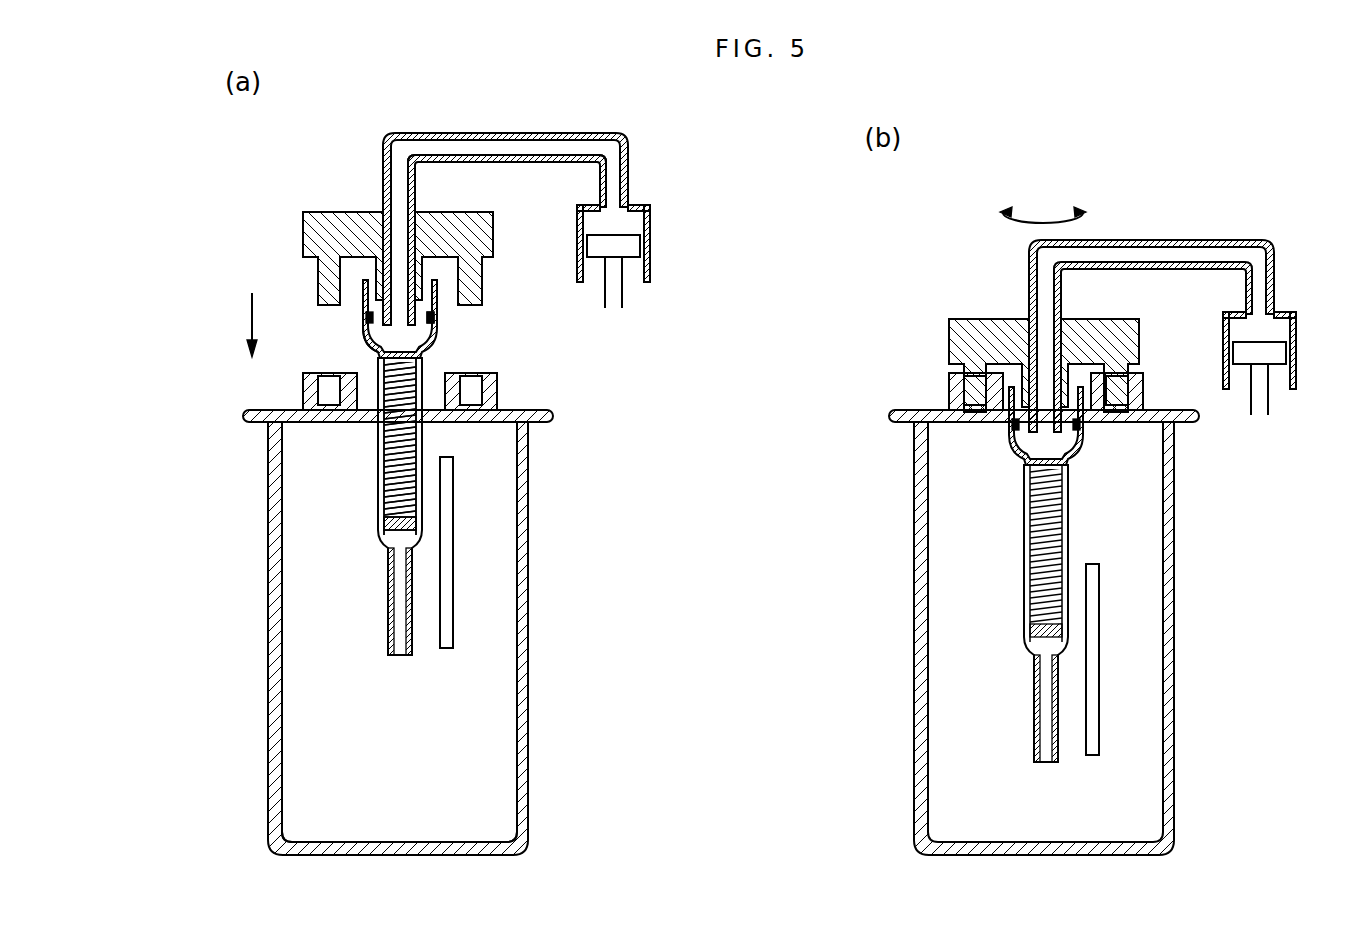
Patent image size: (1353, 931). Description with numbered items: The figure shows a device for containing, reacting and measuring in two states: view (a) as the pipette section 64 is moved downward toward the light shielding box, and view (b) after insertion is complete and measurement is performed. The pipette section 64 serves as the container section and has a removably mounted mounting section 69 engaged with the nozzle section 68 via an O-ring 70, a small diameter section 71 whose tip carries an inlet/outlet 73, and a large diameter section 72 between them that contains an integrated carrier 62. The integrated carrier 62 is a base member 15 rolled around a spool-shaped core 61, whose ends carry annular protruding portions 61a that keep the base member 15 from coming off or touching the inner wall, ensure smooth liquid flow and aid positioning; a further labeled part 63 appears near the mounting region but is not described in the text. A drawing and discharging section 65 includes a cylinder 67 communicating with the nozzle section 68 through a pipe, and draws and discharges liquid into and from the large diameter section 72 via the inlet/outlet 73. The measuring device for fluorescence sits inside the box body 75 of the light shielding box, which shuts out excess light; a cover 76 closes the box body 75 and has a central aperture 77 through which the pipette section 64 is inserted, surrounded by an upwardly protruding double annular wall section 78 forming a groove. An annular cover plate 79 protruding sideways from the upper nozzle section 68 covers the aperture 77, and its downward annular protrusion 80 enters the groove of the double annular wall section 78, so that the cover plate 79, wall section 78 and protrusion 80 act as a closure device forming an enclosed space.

The base member 15 is at (417, 520).
The core 61 is at (378, 522).
The annular protruding portions 61a is at (432, 359).
The integrated carrier 62 is at (412, 350).
The cup-shaped holder 63 is at (378, 345).
The pipette section 64 is at (377, 452).
The drawing and discharging section 65 is at (593, 119).
The cylinder 67 is at (652, 243).
The nozzle section 68 is at (365, 307).
The mounting section 69 is at (436, 318).
The O-ring 70 is at (365, 333).
The small diameter section 71 is at (388, 595).
The large diameter section 72 is at (420, 443).
The inlet/outlet 73 is at (395, 655).
The box body 75 is at (475, 710).
The cover 76 is at (245, 415).
The aperture 77 is at (363, 415).
The double annular wall section 78 is at (470, 373).
The annular cover plate 79 is at (318, 237).
The annular protrusion 80 is at (482, 275).